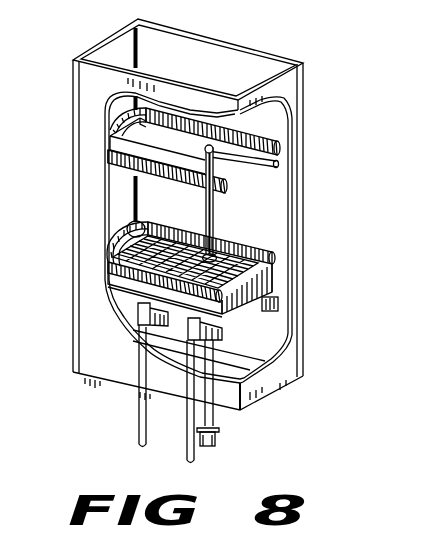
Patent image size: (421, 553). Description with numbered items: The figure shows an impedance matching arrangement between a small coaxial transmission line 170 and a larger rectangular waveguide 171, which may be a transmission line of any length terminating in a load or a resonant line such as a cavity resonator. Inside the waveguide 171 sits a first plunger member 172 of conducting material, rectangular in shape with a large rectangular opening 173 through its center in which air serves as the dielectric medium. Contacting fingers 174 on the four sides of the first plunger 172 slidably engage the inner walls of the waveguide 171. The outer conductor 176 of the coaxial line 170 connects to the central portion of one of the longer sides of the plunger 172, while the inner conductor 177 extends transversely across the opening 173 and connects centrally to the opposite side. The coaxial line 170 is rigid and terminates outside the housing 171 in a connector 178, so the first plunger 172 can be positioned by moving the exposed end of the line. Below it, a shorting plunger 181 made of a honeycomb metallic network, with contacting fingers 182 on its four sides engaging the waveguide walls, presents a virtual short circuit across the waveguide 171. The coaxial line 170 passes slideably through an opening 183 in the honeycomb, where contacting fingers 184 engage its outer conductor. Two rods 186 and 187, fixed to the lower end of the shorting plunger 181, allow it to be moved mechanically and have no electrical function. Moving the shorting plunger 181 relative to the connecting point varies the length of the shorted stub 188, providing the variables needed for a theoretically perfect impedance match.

The rectangular waveguide 171 is at (303, 89).
The first plunger member 172 is at (274, 165).
The rectangular opening 173 is at (190, 154).
The contacting fingers 174 is at (278, 142).
The outer conductor 176 is at (185, 174).
The inner conductor 177 is at (110, 140).
The connector 178 is at (218, 443).
The coaxial transmission line 170 is at (215, 426).
The shorting plunger 181 is at (272, 287).
The contacting fingers 182 is at (274, 262).
The opening 183 is at (214, 240).
The contacting fingers 184 is at (199, 240).
The rod 186 is at (187, 432).
The rod 187 is at (139, 432).
The shorted stub 188 is at (175, 203).